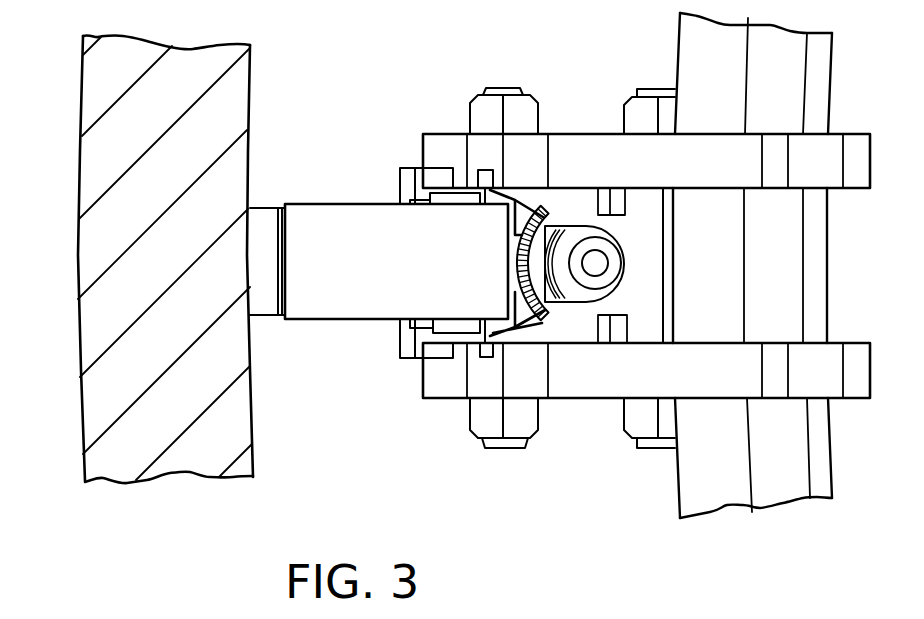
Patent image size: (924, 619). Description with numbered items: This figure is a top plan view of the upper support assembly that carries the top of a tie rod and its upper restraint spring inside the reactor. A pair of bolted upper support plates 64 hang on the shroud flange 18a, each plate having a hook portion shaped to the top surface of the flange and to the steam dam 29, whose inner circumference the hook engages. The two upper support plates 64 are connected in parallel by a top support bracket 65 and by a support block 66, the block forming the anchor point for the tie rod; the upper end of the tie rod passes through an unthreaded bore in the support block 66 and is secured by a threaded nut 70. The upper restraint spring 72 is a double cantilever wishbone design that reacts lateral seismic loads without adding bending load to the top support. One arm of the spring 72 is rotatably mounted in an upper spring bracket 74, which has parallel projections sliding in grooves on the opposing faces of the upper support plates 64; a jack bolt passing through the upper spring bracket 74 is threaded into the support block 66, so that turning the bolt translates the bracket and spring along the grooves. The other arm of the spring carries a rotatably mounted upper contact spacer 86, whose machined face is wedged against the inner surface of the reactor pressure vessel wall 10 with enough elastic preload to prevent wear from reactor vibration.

The wall structure 10 is at (78, 338).
The shroud flange 18a is at (795, 93).
The steam dam 29 is at (820, 448).
The upper support plates 64 is at (695, 175).
The top support bracket 65 is at (647, 228).
The support block 66 is at (525, 322).
The threaded nut 70 is at (512, 302).
The upper restraint spring 72 is at (378, 265).
The upper spring bracket 74 is at (400, 340).
The upper contact spacer 86 is at (262, 305).